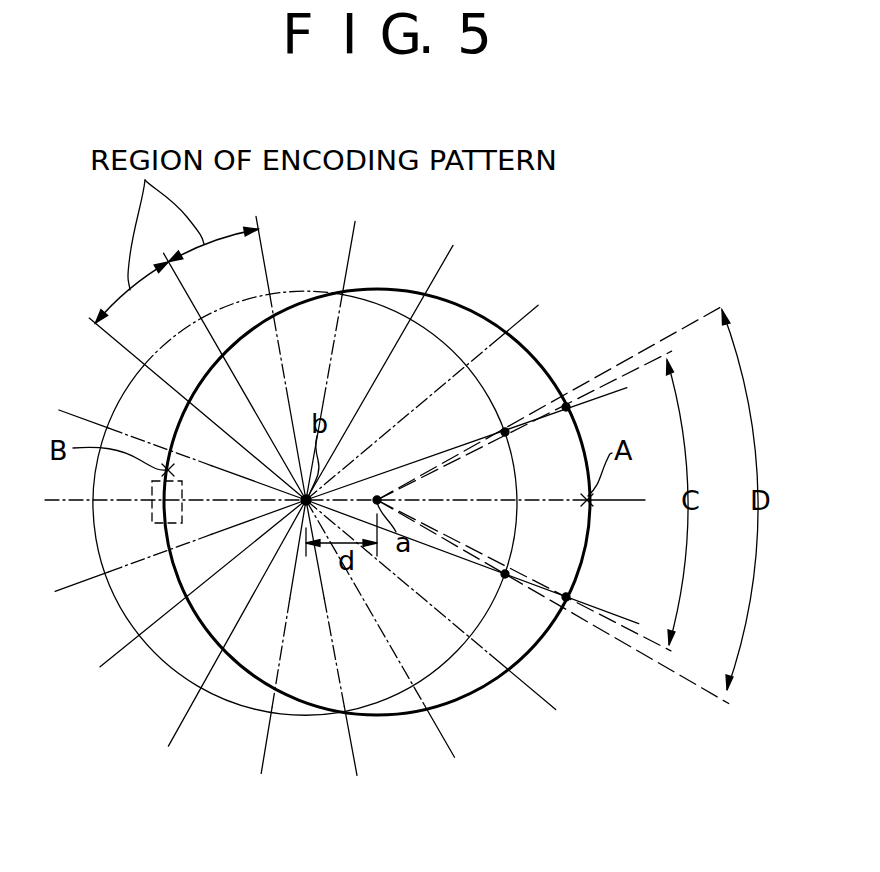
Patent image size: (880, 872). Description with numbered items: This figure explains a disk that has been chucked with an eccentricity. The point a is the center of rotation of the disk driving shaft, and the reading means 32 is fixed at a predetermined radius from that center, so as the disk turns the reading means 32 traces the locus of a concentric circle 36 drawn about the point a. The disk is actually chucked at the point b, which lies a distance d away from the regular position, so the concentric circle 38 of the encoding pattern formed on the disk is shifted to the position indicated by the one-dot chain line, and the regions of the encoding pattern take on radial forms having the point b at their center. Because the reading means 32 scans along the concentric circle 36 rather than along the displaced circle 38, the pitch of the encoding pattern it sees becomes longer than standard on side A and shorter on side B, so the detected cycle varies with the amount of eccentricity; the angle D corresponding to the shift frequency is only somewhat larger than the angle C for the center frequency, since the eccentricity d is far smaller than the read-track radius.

The reading means 32 is at (151, 508).
The concentric circle 36 is at (488, 686).
The concentric circle of the encoding pattern 38 is at (153, 652).